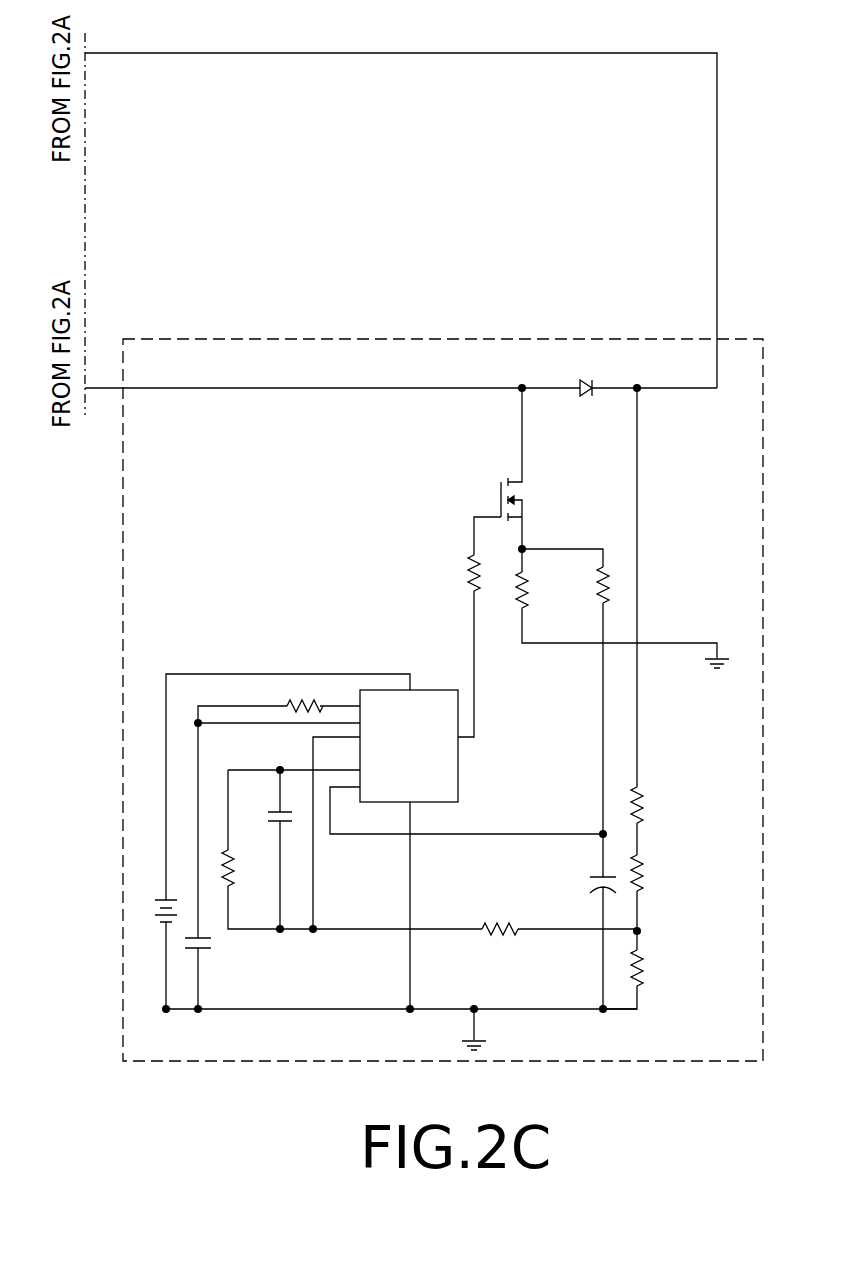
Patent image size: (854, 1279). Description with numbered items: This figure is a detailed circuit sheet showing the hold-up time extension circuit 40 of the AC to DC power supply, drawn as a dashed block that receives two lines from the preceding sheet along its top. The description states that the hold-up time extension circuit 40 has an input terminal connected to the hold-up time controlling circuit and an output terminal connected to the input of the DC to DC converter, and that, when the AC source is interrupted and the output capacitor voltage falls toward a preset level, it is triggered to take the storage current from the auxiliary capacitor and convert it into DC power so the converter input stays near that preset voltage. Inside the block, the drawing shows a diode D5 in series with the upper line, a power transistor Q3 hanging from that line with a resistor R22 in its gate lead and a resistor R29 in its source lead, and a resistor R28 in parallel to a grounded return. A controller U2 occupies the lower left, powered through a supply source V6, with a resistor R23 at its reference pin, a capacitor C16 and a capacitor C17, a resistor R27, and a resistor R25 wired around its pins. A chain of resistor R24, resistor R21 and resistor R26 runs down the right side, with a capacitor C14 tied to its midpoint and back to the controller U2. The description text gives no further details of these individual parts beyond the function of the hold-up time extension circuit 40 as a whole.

The hold-up time extension circuit 40 is at (487, 338).
The diode mur860 D5 is at (590, 390).
The MOSFET transistor IRF450 Q3 is at (490, 471).
The gate resistor R22 is at (486, 642).
The source sense resistor 50 75m R29 is at (604, 608).
The resistor 1K R28 is at (563, 711).
The capacitor 1n C14 is at (587, 919).
The resistor 560K R24 is at (661, 621).
The resistor 560K R21 is at (661, 902).
The resistor 3.2K R26 is at (645, 978).
The PWM controller UC3842 U2 is at (412, 719).
The voltage source 16.5V V6 is at (268, 841).
The resistor 18K R23 is at (279, 810).
The capacitor 2n C16 is at (216, 969).
The capacitor 1n C17 is at (294, 849).
The resistor 400K R27 is at (352, 849).
The resistor 5.6K R25 is at (473, 933).